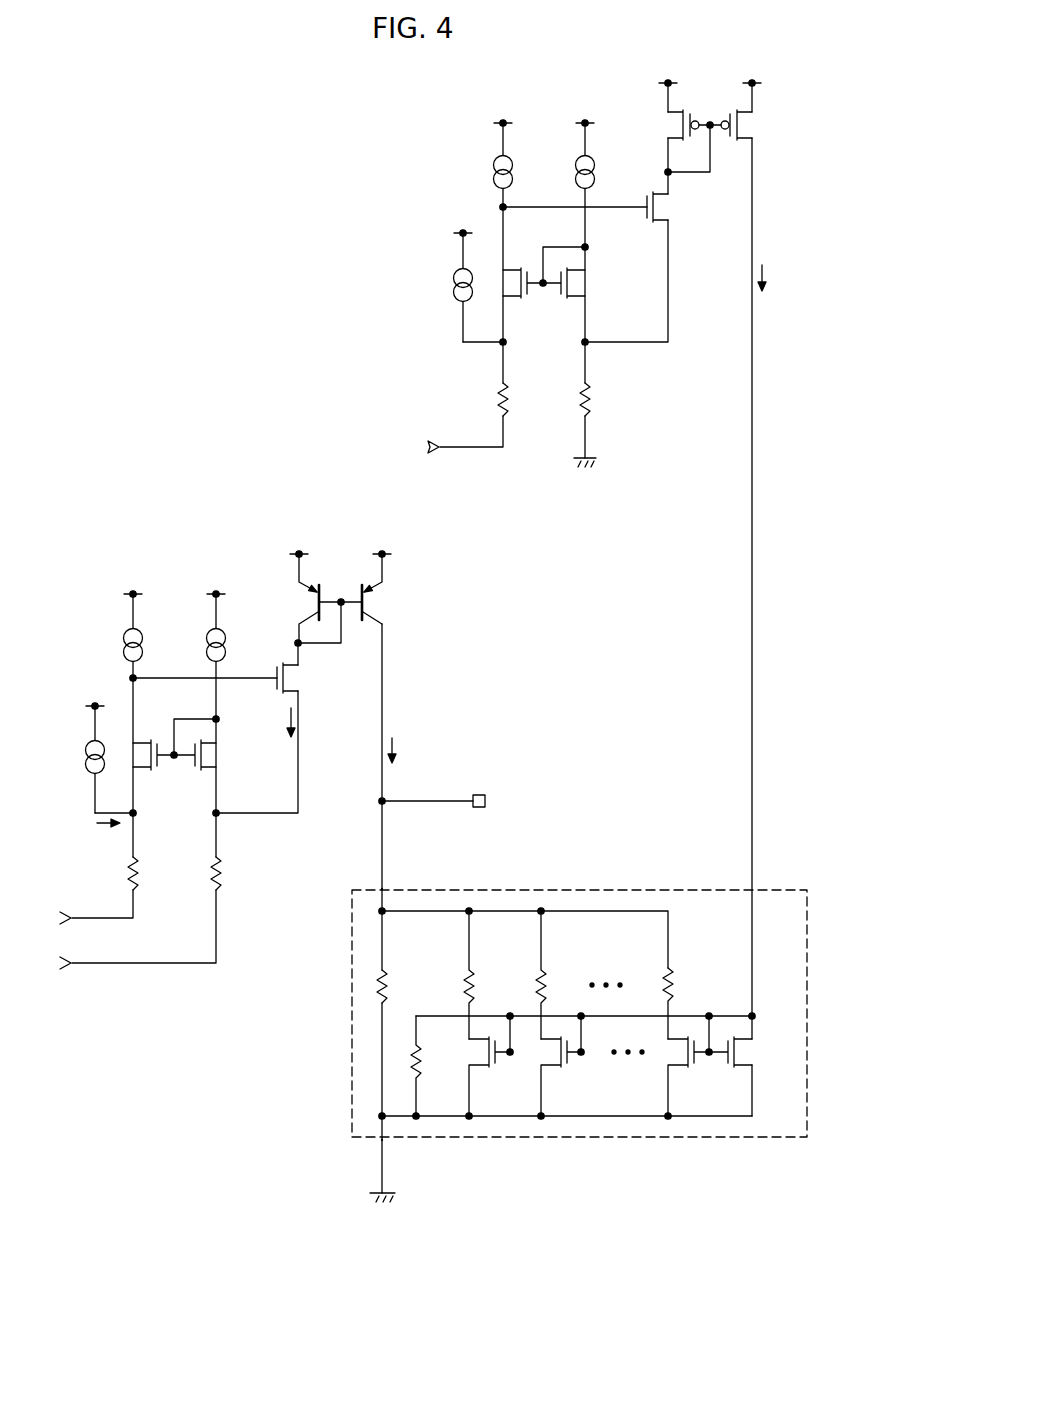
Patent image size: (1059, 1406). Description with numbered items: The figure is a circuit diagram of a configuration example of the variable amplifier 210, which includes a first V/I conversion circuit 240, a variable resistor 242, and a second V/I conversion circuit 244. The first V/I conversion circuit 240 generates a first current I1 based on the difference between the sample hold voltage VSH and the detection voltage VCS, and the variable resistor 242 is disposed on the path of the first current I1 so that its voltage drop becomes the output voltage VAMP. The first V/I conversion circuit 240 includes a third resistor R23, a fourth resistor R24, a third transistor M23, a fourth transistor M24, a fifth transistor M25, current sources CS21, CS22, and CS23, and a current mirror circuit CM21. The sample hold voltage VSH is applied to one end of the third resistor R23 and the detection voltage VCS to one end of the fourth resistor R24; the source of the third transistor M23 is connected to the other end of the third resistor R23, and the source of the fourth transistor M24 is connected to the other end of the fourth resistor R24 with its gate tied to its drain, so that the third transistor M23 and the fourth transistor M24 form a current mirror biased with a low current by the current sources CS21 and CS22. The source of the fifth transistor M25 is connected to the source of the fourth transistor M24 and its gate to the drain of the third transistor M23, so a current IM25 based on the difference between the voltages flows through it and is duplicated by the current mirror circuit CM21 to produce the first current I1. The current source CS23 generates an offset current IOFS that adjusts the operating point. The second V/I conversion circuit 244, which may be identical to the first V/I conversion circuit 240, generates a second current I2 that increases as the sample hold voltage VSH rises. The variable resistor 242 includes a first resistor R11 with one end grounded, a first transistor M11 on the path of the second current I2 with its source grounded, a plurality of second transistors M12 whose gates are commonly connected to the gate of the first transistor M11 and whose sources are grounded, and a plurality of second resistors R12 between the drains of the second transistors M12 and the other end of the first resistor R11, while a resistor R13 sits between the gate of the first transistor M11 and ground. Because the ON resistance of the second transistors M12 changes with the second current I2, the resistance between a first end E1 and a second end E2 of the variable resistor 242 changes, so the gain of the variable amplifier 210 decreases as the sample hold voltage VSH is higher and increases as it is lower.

The current mirror circuit CM21 is at (732, 107).
The current source CS21 is at (520, 181).
The current source CS22 is at (602, 181).
The current source CS23 is at (450, 292).
The third transistor M23 is at (522, 300).
The fourth transistor M24 is at (590, 290).
The fifth transistor M25 is at (302, 684).
The third resistor R23 is at (509, 406).
The fourth resistor R24 is at (591, 406).
The first resistor R11 is at (390, 974).
The second resistors R12 is at (479, 974).
The resistor R13 is at (438, 1072).
The first transistor M11 is at (752, 1055).
The second transistors M12 is at (489, 1070).
The first end E1 is at (376, 872).
The second end E2 is at (376, 1156).
The first V/I conversion circuit 240 is at (312, 993).
The variable resistor 242 is at (567, 1140).
The second V/I conversion circuit 244 is at (770, 480).
The variable amplifier 210 is at (436, 1248).
The sample hold voltage VSH is at (228, 683).
The detection voltage VCS is at (44, 963).
The output voltage VAMP is at (454, 803).
The first current I1 is at (403, 750).
The second current I2 is at (773, 279).
The current flowing through the fifth transistor IM25 is at (269, 722).
The offset current IOFS is at (102, 836).